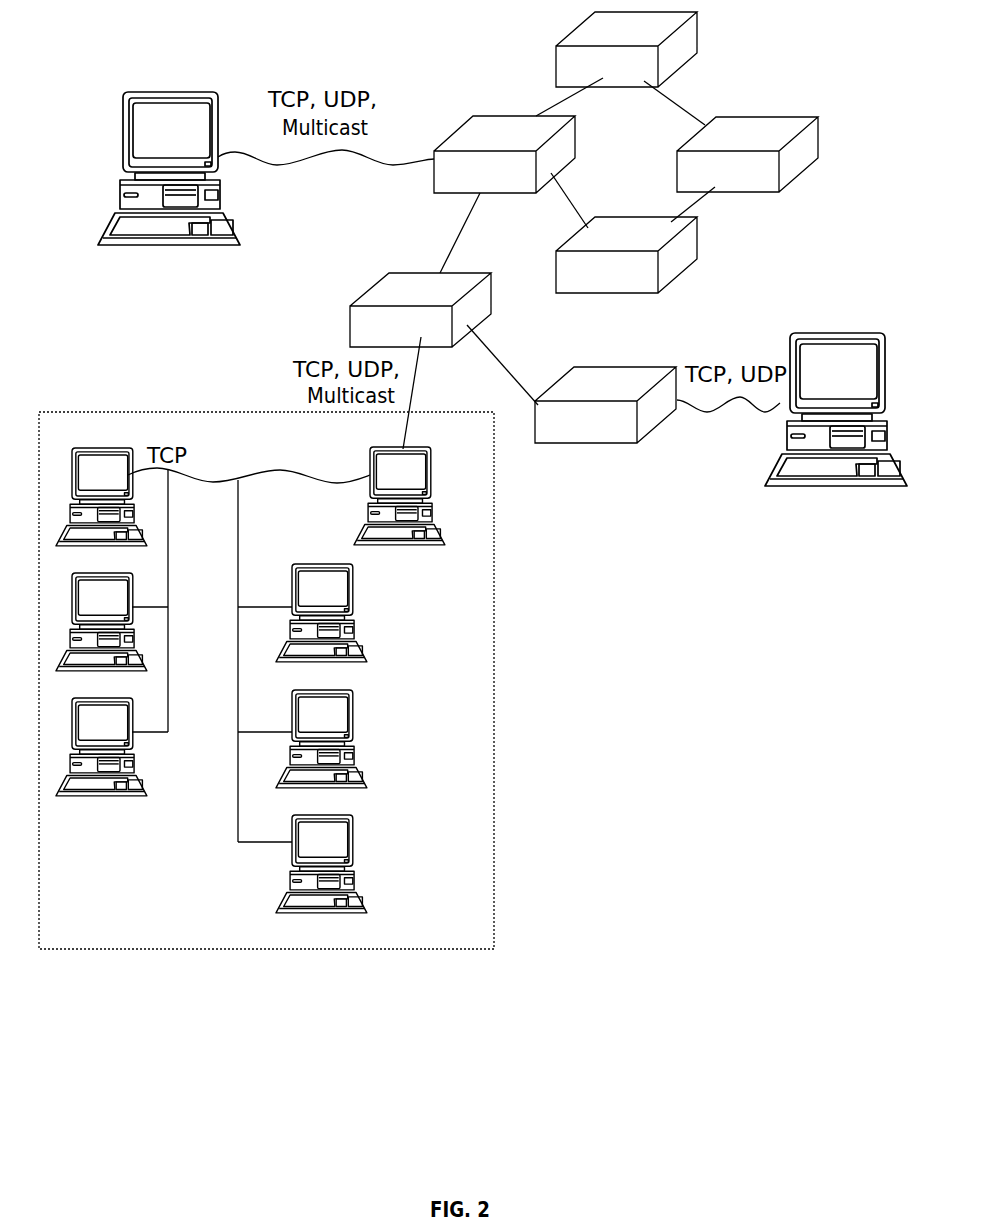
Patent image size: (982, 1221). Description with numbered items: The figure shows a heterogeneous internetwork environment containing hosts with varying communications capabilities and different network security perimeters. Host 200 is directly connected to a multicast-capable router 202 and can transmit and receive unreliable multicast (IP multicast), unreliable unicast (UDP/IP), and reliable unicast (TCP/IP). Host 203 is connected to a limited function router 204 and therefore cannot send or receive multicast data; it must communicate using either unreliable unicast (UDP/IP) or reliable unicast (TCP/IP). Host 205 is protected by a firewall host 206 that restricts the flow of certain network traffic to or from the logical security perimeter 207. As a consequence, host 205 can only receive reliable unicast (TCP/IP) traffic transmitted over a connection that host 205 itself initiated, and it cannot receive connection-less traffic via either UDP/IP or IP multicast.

The host 200 is at (170, 91).
The multicast-capable router 202 is at (504, 154).
The host 203 is at (837, 333).
The limited function router 204 is at (605, 405).
The host 205 is at (93, 448).
The firewall host 206 is at (430, 486).
The logical security perimeter 207 is at (495, 663).